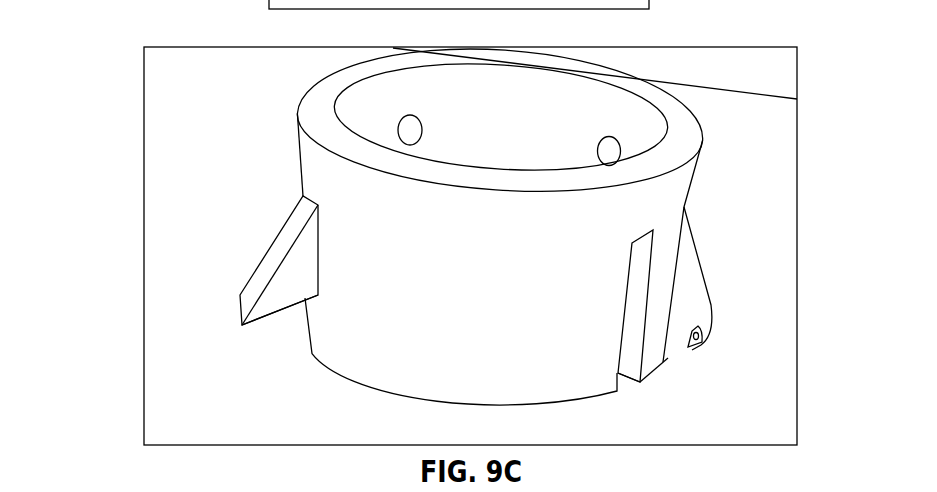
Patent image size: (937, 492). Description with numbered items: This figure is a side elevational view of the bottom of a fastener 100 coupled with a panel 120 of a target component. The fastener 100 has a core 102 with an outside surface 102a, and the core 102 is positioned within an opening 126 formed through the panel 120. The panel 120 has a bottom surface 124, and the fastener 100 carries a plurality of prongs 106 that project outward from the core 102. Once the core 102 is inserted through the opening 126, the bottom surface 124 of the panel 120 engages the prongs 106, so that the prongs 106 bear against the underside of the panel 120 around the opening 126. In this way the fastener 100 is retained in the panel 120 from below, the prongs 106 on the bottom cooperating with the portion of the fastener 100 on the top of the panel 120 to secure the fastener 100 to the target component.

The fastener 100 is at (93, 26).
The core 102 is at (383, 358).
The outside surface 102a is at (315, 187).
The prongs 106 is at (278, 250).
The panel 120 is at (190, 90).
The bottom surface 124 is at (165, 127).
The opening 126 is at (284, 319).